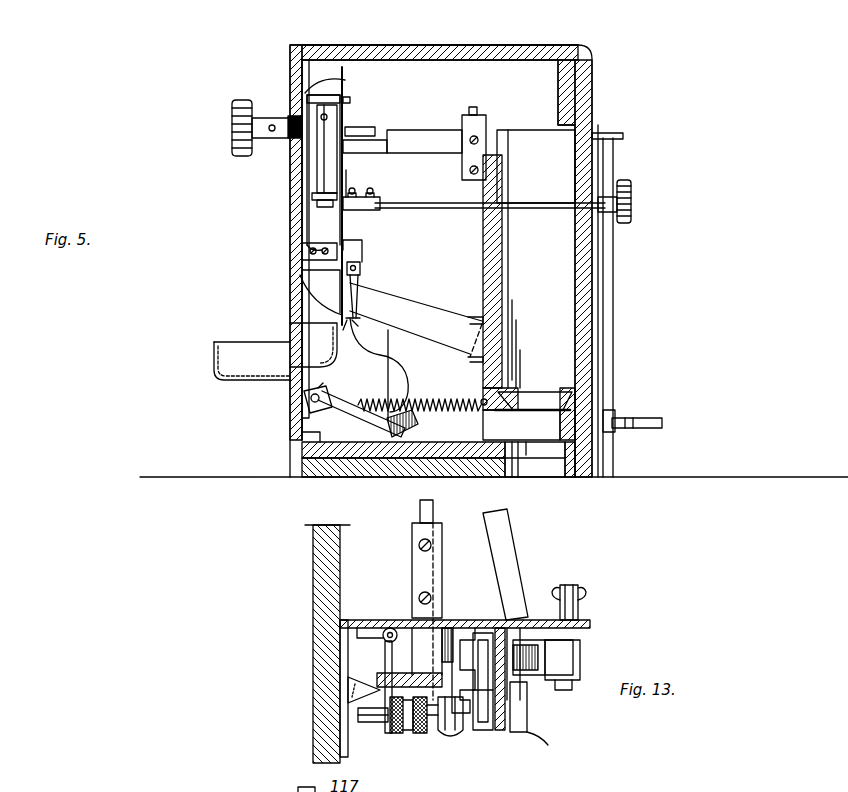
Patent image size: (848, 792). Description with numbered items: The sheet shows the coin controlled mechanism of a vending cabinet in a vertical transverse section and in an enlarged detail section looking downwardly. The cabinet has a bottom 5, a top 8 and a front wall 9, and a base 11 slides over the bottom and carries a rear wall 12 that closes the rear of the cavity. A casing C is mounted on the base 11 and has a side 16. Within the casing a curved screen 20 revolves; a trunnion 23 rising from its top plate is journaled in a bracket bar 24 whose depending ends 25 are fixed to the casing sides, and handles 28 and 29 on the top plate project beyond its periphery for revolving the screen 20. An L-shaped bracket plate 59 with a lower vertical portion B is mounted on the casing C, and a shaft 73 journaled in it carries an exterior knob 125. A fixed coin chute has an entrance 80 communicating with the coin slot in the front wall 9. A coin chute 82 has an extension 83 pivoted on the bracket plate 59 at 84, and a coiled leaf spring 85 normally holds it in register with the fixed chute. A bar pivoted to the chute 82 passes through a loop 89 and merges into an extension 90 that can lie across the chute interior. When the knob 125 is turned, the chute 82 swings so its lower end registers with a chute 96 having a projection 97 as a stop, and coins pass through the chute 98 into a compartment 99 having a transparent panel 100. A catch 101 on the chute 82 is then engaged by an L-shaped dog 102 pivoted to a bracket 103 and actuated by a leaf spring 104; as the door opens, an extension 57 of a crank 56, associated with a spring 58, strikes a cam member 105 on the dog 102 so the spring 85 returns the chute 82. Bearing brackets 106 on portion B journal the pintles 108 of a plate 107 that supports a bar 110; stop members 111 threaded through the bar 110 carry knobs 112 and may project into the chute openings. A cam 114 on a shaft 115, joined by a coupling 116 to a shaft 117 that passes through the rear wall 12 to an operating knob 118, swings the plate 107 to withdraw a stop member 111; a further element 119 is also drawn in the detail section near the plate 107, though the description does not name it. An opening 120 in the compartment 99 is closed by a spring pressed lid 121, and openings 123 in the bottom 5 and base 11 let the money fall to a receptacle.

In FIG. 5, the bottom 5 is at (399, 466).
In FIG. 5, the top 8 is at (440, 30).
In FIG. 5, the front wall 9 is at (290, 73).
In FIG. 5, the base 11 is at (362, 456).
In FIG. 5, the rear wall 12 is at (586, 112).
In FIG. 13, the side 16 is at (322, 614).
In FIG. 5, the curved screen 20 is at (614, 165).
In FIG. 5, the trunnion 23 is at (474, 107).
In FIG. 5, the bracket bar 24 is at (488, 120).
In FIG. 5, the depending ends 25 is at (462, 126).
In FIG. 5, the handle 28 is at (606, 134).
In FIG. 5, the handle 29 is at (393, 131).
In FIG. 5, the crank 56 is at (373, 417).
In FIG. 5, the extension 57 is at (418, 430).
In FIG. 5, the spring 58 is at (422, 396).
In FIG. 5, the L-shaped bracket plate 59 is at (343, 67).
In FIG. 13, the L-shaped bracket plate 59 is at (592, 624).
In FIG. 5, the shaft 73 is at (296, 124).
In FIG. 13, the entrance 80 is at (562, 684).
In FIG. 5, the coin chute 82 is at (318, 219).
In FIG. 13, the coin chute 82 is at (498, 732).
In FIG. 5, the extension 83 is at (315, 150).
In FIG. 13, the extension 83 is at (508, 745).
In FIG. 5, the pivot 84 is at (350, 100).
In FIG. 13, the coiled leaf spring 85 is at (530, 686).
In FIG. 13, the loop 89 is at (468, 680).
In FIG. 13, the extension 90 is at (505, 622).
In FIG. 5, the chute 96 is at (246, 350).
In FIG. 13, the chute 96 is at (535, 745).
In FIG. 13, the projection 97 is at (530, 702).
In FIG. 5, the chute 98 is at (428, 320).
In FIG. 13, the chute 98 is at (510, 560).
In FIG. 5, the compartment 99 is at (511, 271).
In FIG. 5, the transparent panel 100 is at (600, 288).
In FIG. 5, the catch 101 is at (312, 243).
In FIG. 13, the catch 101 is at (572, 585).
In FIG. 5, the L-shaped dog 102 is at (357, 295).
In FIG. 13, the L-shaped dog 102 is at (580, 605).
In FIG. 5, the bracket 103 is at (360, 268).
In FIG. 13, the bracket 103 is at (578, 590).
In FIG. 5, the leaf spring 104 is at (345, 290).
In FIG. 5, the cam member 105 is at (412, 386).
In FIG. 13, the bearing brackets 106 is at (372, 628).
In FIG. 13, the plate 107 is at (386, 670).
In FIG. 13, the pintles 108 is at (391, 628).
In FIG. 13, the bar 110 is at (454, 735).
In FIG. 13, the stop members 111 is at (374, 728).
In FIG. 13, the knobs 112 is at (412, 733).
In FIG. 13, the cam 114 is at (398, 673).
In FIG. 13, the shaft 115 is at (440, 618).
In FIG. 5, the coupling 116 is at (353, 205).
In FIG. 13, the coupling 116 is at (440, 573).
In FIG. 5, the shaft 117 is at (416, 202).
In FIG. 13, the shaft 117 is at (433, 517).
In FIG. 5, the operating knob 118 is at (632, 200).
In FIG. 13, the wedge 119 is at (370, 678).
In FIG. 5, the opening 120 is at (528, 400).
In FIG. 5, the lid 121 is at (521, 425).
In FIG. 5, the openings 123 is at (542, 463).
In FIG. 5, the knob 125 is at (232, 118).
In FIG. 5, the lower vertical portion B is at (346, 247).
In FIG. 13, the lower vertical portion B is at (445, 618).
In FIG. 5, the casing C is at (425, 130).